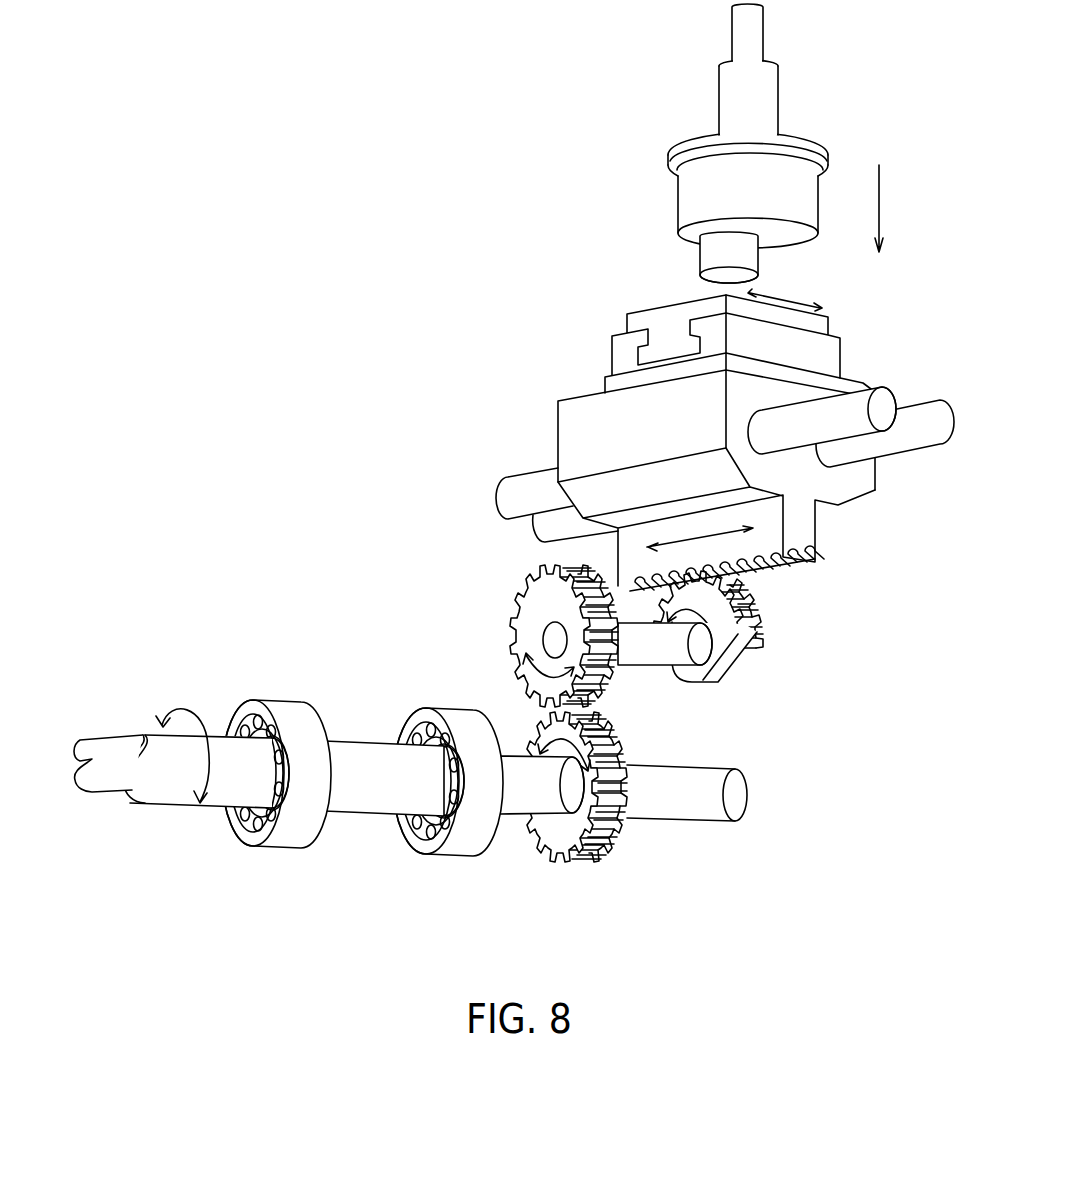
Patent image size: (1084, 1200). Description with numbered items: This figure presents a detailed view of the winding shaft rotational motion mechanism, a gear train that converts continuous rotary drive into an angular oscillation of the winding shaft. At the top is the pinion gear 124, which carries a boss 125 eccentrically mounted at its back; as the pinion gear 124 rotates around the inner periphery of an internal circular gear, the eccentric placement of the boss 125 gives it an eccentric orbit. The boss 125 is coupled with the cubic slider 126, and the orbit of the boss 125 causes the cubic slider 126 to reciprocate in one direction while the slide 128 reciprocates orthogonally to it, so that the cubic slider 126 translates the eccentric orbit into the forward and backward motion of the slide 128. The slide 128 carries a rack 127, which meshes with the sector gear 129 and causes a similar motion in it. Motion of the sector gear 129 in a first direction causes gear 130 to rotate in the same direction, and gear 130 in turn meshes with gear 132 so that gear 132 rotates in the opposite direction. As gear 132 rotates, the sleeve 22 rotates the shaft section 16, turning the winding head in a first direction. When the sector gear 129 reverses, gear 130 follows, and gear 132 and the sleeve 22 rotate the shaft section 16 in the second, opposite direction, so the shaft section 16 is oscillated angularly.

The pinion gear 124 is at (733, 29).
The boss 125 is at (700, 266).
The cubic slider 126 is at (663, 312).
The rack 127 is at (760, 574).
The slide 128 is at (830, 487).
The sector gear 129 is at (723, 663).
The gear 130 is at (538, 608).
The gear 132 is at (602, 848).
The shaft section 16 is at (518, 803).
The sleeve 22 is at (353, 737).